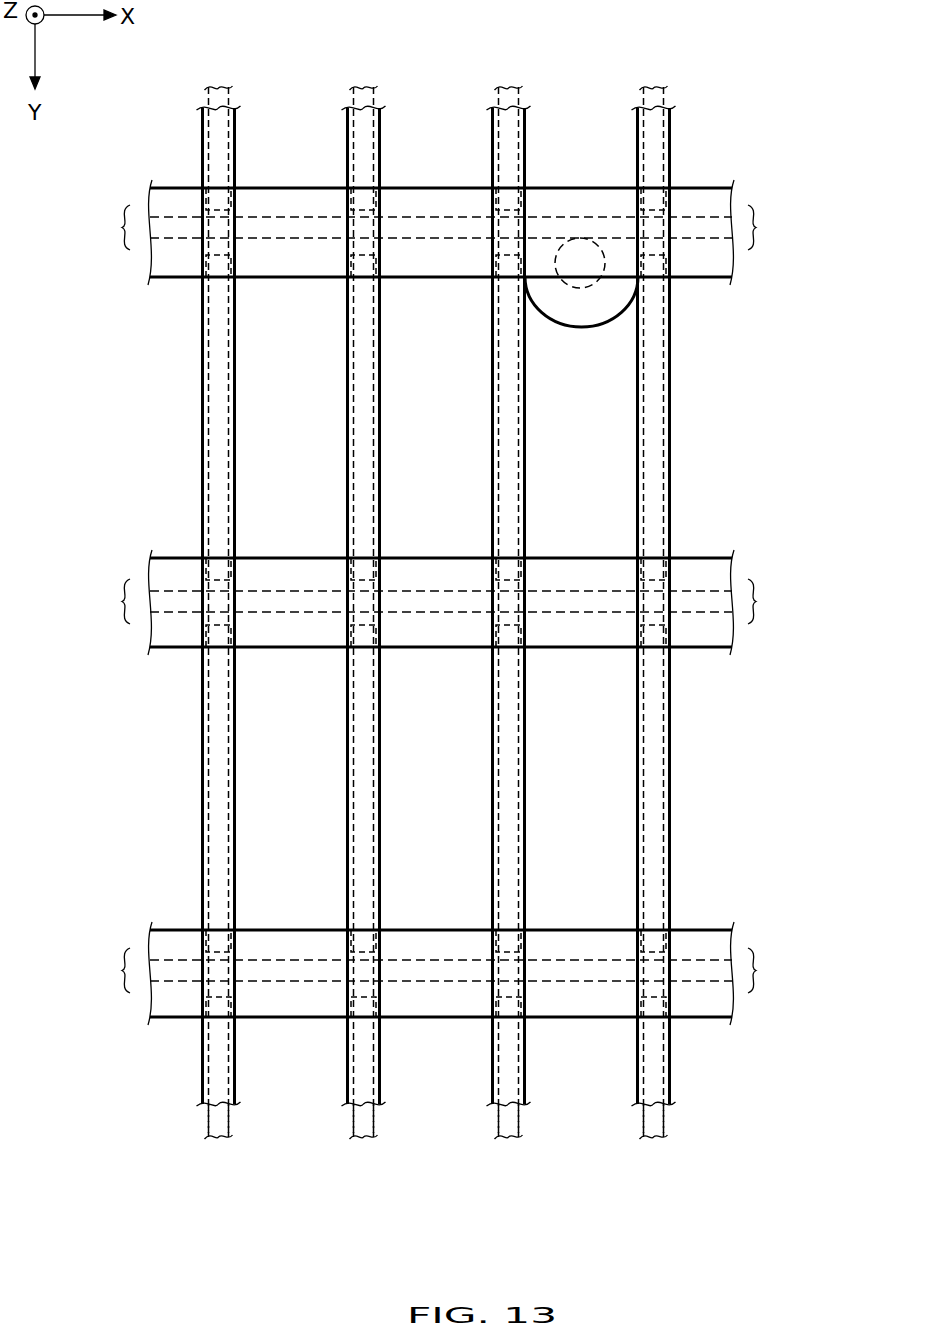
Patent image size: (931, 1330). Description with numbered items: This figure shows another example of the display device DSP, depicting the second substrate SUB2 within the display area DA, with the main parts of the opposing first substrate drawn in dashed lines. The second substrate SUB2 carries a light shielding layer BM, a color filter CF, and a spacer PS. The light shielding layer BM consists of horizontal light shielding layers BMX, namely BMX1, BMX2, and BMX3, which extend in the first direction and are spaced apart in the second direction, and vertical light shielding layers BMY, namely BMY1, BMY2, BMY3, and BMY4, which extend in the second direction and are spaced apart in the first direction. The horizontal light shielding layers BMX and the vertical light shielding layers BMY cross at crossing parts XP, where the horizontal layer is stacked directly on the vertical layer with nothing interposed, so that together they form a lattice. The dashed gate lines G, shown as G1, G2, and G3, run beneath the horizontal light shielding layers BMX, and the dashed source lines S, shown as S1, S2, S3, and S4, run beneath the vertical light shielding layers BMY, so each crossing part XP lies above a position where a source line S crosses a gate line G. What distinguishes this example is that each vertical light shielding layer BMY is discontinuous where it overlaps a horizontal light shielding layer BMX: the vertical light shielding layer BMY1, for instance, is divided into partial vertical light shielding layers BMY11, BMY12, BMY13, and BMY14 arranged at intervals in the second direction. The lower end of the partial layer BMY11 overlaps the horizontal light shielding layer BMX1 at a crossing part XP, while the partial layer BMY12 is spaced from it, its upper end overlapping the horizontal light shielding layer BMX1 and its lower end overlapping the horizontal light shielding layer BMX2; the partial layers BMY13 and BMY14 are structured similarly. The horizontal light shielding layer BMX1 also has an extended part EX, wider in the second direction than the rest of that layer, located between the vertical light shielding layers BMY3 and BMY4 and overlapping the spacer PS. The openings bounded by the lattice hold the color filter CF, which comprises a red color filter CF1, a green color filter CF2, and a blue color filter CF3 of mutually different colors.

The display device DSP is at (689, 56).
The second substrate SUB2 is at (772, 119).
The display area DA is at (713, 405).
The light shielding layer BM is at (179, 292).
The horizontal light shielding layer BMX is at (515, 602).
The horizontal light shielding layer BMX1 is at (722, 199).
The horizontal light shielding layer BMX2 is at (722, 577).
The horizontal light shielding layer BMX3 is at (722, 945).
The vertical light shielding layer BMY is at (356, 668).
The vertical light shielding layer BMY1 is at (139, 668).
The vertical light shielding layer BMY2 is at (360, 1079).
The vertical light shielding layer BMY3 is at (506, 1079).
The vertical light shielding layer BMY4 is at (650, 1079).
The partial vertical light shielding layer BMY11 is at (214, 158).
The partial vertical light shielding layer BMY12 is at (214, 410).
The partial vertical light shielding layer BMY13 is at (214, 744).
The partial vertical light shielding layer BMY14 is at (128, 1060).
The gate line G is at (393, 599).
The first scanning line G1 is at (122, 228).
The second scanning line G2 is at (122, 602).
The third scanning line G3 is at (122, 971).
The source line S is at (474, 1148).
The first signal line S1 is at (228, 1125).
The second signal line S2 is at (374, 1125).
The third signal line S3 is at (518, 1125).
The fourth signal line S4 is at (664, 1125).
The crossing part XP is at (218, 231).
The spacer PS is at (600, 256).
The extended part EX is at (582, 329).
The color filter CF is at (436, 609).
The color filter CF1 is at (291, 609).
The color filter CF2 is at (436, 609).
The color filter CF3 is at (581, 609).